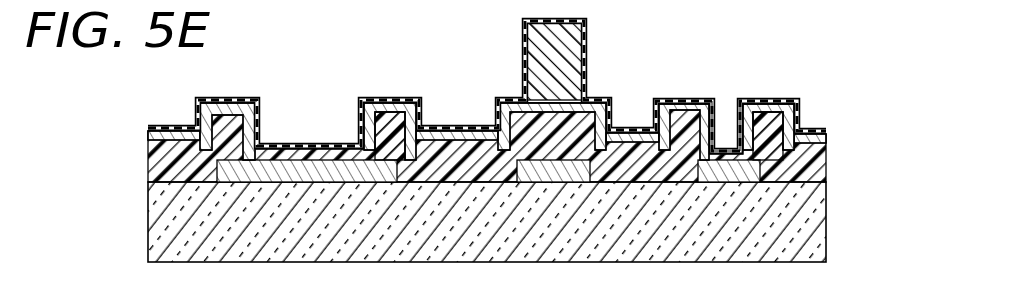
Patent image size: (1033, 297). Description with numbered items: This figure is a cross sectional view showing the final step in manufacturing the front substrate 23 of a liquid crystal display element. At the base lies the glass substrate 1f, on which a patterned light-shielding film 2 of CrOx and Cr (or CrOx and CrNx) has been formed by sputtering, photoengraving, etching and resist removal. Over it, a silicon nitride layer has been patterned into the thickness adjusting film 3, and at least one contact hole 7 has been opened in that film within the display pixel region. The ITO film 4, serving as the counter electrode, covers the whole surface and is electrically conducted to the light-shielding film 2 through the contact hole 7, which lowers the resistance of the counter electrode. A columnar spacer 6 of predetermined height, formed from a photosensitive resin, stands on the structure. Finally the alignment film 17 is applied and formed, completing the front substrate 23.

The glass substrate 1f is at (172, 190).
The light-shielding film 2 is at (300, 166).
The thickness adjusting film 3 is at (398, 108).
The ITO film 4 is at (451, 126).
The columnar spacer 6 is at (586, 42).
The contact hole 7 is at (726, 120).
The alignment film 17 is at (778, 92).
The front substrate 23 is at (852, 267).